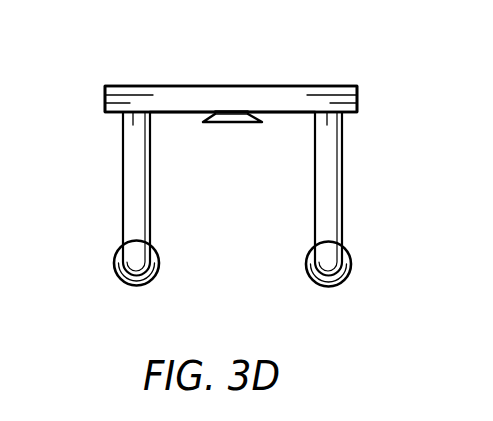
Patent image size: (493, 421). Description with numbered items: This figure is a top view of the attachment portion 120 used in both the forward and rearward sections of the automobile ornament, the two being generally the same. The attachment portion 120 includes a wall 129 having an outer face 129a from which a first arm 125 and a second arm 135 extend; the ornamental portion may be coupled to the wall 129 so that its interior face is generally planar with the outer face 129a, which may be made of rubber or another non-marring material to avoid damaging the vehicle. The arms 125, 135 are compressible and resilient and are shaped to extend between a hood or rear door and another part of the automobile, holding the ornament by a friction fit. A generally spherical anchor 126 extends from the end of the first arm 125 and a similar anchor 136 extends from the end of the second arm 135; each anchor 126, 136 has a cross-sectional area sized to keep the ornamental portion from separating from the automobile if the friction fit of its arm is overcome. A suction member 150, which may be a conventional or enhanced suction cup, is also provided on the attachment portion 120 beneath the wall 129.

The attachment portion 120 is at (97, 67).
The wall 129 is at (198, 77).
The outer face 129a is at (167, 113).
The suction member 150 is at (240, 123).
The first arm 125 is at (115, 180).
The anchor 126 is at (115, 259).
The second arm 135 is at (350, 163).
The anchor 136 is at (345, 281).